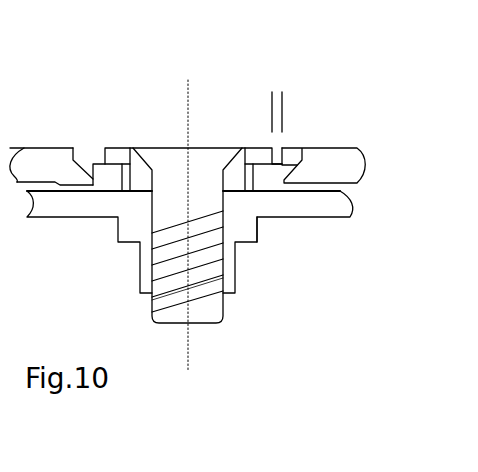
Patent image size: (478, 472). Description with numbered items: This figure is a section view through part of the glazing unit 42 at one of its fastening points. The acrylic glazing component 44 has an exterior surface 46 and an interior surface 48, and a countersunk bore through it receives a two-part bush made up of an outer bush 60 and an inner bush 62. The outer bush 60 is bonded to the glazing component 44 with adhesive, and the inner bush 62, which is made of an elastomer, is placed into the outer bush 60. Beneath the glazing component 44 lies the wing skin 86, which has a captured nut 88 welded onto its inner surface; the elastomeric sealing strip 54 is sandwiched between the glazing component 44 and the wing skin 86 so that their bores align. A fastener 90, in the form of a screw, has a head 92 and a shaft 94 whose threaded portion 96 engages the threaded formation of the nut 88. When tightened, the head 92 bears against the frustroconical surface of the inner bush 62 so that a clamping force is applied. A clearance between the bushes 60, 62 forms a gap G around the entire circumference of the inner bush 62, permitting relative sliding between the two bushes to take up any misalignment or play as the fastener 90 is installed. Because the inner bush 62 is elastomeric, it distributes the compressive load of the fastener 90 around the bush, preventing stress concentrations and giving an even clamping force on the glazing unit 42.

The glazing unit 42 is at (399, 110).
The glazing component 44 is at (338, 160).
The exterior surface 46 is at (24, 148).
The interior surface 48 is at (43, 182).
The sealing strip 54 is at (330, 193).
The outer bush 60 is at (87, 157).
The inner bush 62 is at (128, 160).
The wing skin 86 is at (298, 207).
The captured nut 88 is at (234, 283).
The fastener 90 is at (174, 125).
The head 92 is at (203, 160).
The shaft 94 is at (182, 196).
The threaded portion 96 is at (168, 283).
The gap G is at (312, 112).